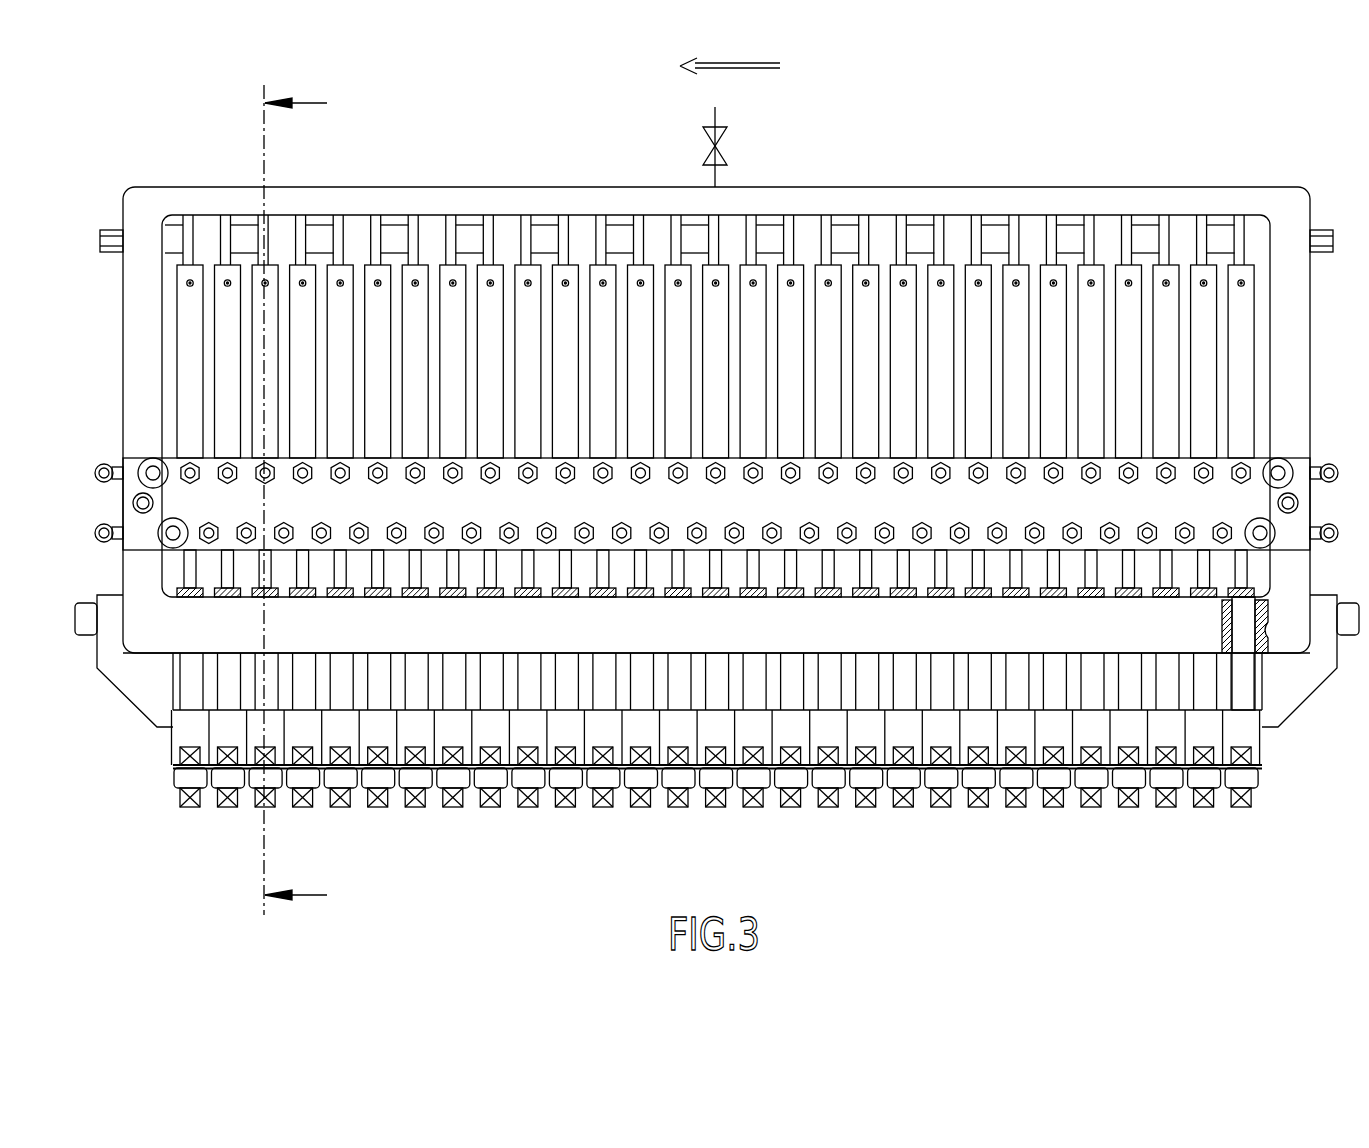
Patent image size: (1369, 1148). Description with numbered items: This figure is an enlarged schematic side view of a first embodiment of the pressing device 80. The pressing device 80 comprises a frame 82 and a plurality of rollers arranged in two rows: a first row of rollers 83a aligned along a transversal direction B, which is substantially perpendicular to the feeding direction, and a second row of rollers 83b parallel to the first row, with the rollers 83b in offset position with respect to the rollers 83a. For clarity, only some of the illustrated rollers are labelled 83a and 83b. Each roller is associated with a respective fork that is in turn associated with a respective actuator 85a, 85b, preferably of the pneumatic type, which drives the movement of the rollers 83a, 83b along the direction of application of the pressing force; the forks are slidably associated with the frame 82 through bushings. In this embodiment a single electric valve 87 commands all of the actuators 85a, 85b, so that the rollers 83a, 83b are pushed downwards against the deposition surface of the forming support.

The pressing device 80 is at (1205, 122).
The frame 82 is at (145, 310).
The actuator 85a is at (195, 305).
The actuator 85b is at (227, 290).
The roller 83a is at (187, 807).
The roller 83b is at (225, 810).
The electric valve 87 is at (742, 150).
The transversal direction B is at (760, 64).